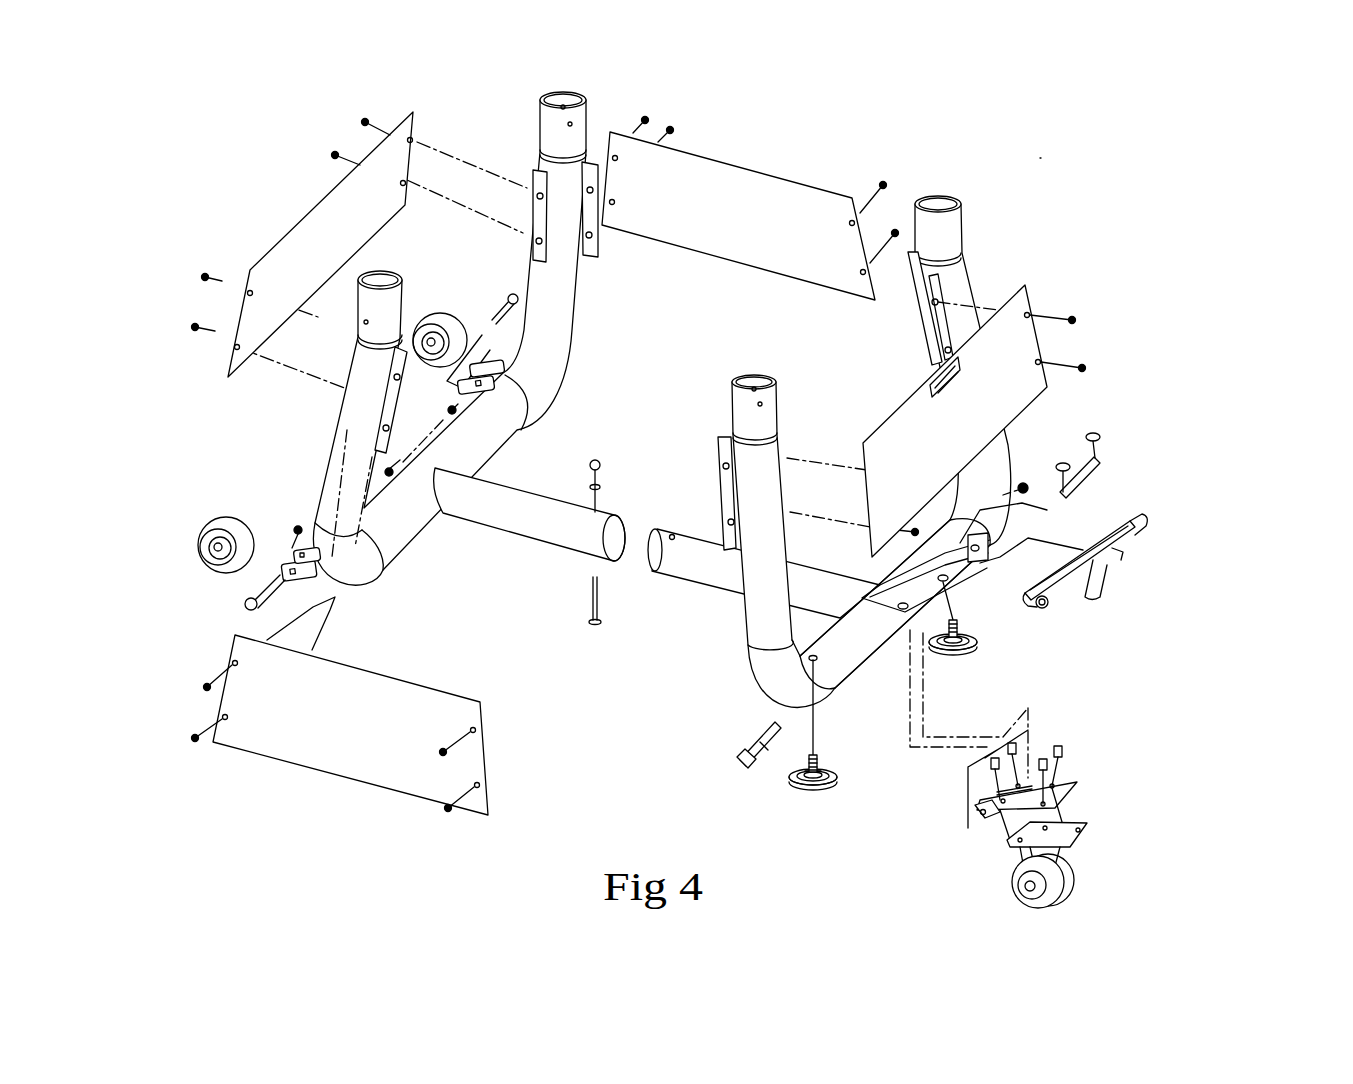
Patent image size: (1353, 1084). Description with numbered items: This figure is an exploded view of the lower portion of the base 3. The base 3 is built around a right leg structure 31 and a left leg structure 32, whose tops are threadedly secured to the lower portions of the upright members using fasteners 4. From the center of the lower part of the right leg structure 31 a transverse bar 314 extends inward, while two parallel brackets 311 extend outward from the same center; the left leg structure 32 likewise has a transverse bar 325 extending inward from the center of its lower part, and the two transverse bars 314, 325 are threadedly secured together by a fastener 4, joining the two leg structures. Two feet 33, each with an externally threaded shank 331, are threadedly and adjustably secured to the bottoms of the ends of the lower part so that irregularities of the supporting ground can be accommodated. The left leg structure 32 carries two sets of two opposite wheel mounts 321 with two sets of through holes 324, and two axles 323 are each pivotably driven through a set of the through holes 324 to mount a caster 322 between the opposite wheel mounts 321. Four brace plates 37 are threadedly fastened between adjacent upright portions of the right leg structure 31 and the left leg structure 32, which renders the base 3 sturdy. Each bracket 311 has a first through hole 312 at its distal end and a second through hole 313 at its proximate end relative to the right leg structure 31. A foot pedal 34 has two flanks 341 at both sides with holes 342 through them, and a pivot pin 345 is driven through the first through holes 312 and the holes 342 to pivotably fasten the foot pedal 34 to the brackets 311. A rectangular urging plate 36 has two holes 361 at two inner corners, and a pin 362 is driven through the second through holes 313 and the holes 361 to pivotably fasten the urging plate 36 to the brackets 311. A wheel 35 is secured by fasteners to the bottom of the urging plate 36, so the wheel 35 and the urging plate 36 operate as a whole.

The base 3 is at (1040, 158).
The right leg structure 31 is at (955, 277).
The brackets 311 is at (922, 597).
The first through hole 312 is at (963, 597).
The second through hole 313 is at (903, 606).
The transverse bar 314 is at (720, 577).
The left leg structure 32 is at (343, 433).
The wheel mounts 321 is at (478, 384).
The caster 322 is at (437, 313).
The axles 323 is at (500, 297).
The through holes 324 is at (287, 572).
The transverse bar 325 is at (530, 510).
The feet 33 is at (977, 647).
The externally threaded shank 331 is at (790, 778).
The foot pedal 34 is at (1160, 548).
The flanks 341 is at (1107, 577).
The holes 342 is at (1050, 600).
The pivot pin 345 is at (1093, 465).
The wheel 35 is at (1053, 883).
The urging plate 36 is at (1077, 788).
The holes 361 is at (982, 817).
The pin 362 is at (752, 748).
The brace plates 37 is at (323, 230).
The fasteners 4 is at (593, 593).